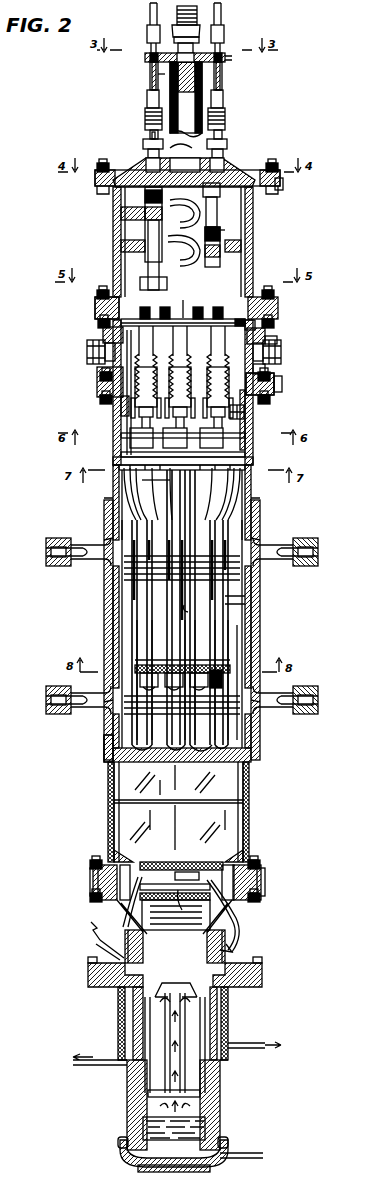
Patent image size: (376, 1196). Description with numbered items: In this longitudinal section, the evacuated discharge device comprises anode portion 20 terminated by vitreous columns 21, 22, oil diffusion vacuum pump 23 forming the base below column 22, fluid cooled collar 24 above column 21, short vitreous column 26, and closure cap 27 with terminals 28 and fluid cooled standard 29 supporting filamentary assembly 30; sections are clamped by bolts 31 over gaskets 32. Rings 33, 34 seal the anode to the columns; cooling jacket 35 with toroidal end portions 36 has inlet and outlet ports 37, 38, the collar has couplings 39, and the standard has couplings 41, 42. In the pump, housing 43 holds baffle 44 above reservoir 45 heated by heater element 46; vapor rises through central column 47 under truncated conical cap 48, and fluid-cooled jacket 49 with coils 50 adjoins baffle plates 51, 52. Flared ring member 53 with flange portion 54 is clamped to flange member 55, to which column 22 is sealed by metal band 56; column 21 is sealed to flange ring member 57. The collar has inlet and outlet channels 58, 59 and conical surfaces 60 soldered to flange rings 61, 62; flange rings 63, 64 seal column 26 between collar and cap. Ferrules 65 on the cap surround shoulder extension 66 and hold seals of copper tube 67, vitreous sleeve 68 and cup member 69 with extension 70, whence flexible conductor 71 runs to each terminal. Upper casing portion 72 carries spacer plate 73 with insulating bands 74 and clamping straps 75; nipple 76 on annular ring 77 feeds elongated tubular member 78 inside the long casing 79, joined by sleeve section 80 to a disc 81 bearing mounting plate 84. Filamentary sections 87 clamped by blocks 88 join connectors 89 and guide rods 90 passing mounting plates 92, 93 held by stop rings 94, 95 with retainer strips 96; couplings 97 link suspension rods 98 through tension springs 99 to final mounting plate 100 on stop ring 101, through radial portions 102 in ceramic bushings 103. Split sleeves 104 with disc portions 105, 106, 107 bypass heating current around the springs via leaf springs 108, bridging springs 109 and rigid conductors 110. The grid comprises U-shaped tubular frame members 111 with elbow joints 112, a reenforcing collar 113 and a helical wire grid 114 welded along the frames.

The anode portion 20 is at (251, 593).
The vitreous column 21 is at (245, 428).
The vitreous column 22 is at (249, 784).
The vacuum pump 23 is at (228, 1031).
The fluid cooled collar 24 is at (268, 336).
The short vitreous column 26 is at (253, 252).
The closure cap 27 is at (237, 160).
The terminals 28 is at (150, 13).
The central fluid cooled standard 29 is at (186, 99).
The filamentary assembly 30 is at (176, 628).
The clamping bolts 31 is at (272, 168).
The yieldable gaskets 32 is at (97, 182).
The ring 33 is at (251, 520).
The ring 34 is at (251, 733).
The cooling jacket 35 is at (251, 649).
The toroidal end portions 36 is at (282, 542).
The inlet port 37 is at (46, 702).
The outlet port 38 is at (46, 550).
The inlet couplings 39 is at (87, 346).
The inlet coupling 41 is at (178, 12).
The outlet coupling 42 is at (200, 64).
The pump housing 43 is at (237, 932).
The baffle 44 is at (202, 1093).
The reservoir 45 is at (140, 1112).
The heater element 46 is at (228, 1144).
The central column 47 is at (167, 1035).
The truncated conical cap 48 is at (175, 983).
The fluid-cooled jacket 49 is at (228, 1007).
The coils 50 is at (175, 876).
The baffle plate 51 is at (175, 896).
The baffle plate 52 is at (185, 862).
The flared ring member 53 is at (232, 900).
The flange portion 54 is at (265, 892).
The flange member 55 is at (90, 878).
The metallic band 56 is at (113, 204).
The flange ring member 57 is at (282, 385).
The inlet channel 58 is at (278, 341).
The outlet channel 59 is at (265, 334).
The truncated conical surfaces 60 is at (265, 369).
The flange ring 61 is at (274, 378).
The flange ring 62 is at (258, 323).
The flange ring 63 is at (95, 300).
The flange ring 64 is at (283, 188).
The ferrules 65 is at (143, 143).
The shoulder extension 66 is at (200, 158).
The copper tube 67 is at (152, 134).
The vitreous sleeve 68 is at (150, 131).
The copper cup member 69 is at (145, 112).
The cylindrical extension 70 is at (147, 98).
The flexible braided conductor 71 is at (150, 70).
The upper casing portion 72 is at (225, 109).
The annular spacer plate 73 is at (153, 54).
The insulating band 74 is at (220, 54).
The clamping strap 75 is at (232, 61).
The nipple 76 is at (222, 76).
The annular ring 77 is at (158, 76).
The elongated tubular member 78 is at (223, 97).
The tubular casing member 79 is at (103, 334).
The sleeve section 80 is at (225, 238).
The metallic disc 81 is at (205, 660).
The mounting plate 84 is at (230, 660).
The filamentary sections 87 is at (245, 605).
The metallic blocks 88 is at (222, 675).
The rigid connectors 89 is at (132, 531).
The guide rods 90 is at (142, 481).
The mounting plate 92 is at (222, 479).
The mounting plate 93 is at (121, 454).
The stop ring 94 is at (160, 481).
The stop ring 95 is at (246, 455).
The retainer strips 96 is at (130, 435).
The couplings 97 is at (289, 412).
The suspension rods 98 is at (121, 324).
The helical tension springs 99 is at (97, 375).
The final mounting plate 100 is at (186, 301).
The stop ring 101 is at (160, 340).
The radially projecting portions 102 is at (209, 306).
The ceramic bushings 103 is at (155, 306).
The split sleeves 104 is at (148, 250).
The disc portion 105 is at (127, 416).
The disc portion 106 is at (121, 405).
The disc portion 107 is at (145, 225).
The arcuate leaf spring 108 is at (205, 216).
The bridging lead spring 109 is at (220, 190).
The rigid conductor 110 is at (142, 166).
The U-shaped tubular frame members 111 is at (215, 633).
The elbow joints 112 is at (244, 327).
The reenforcing collar 113 is at (252, 466).
The helical wire grid 114 is at (124, 580).